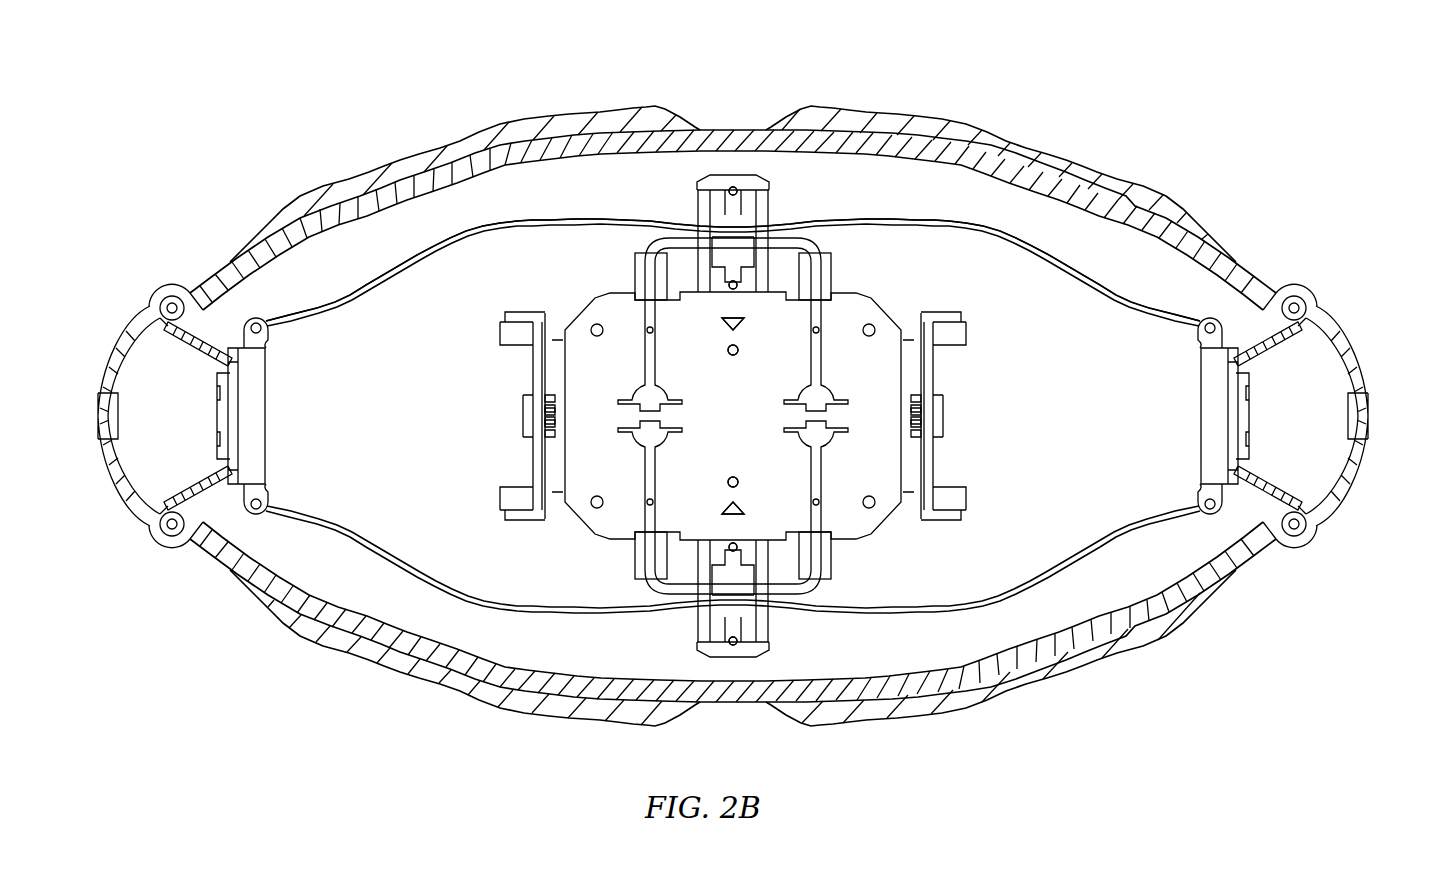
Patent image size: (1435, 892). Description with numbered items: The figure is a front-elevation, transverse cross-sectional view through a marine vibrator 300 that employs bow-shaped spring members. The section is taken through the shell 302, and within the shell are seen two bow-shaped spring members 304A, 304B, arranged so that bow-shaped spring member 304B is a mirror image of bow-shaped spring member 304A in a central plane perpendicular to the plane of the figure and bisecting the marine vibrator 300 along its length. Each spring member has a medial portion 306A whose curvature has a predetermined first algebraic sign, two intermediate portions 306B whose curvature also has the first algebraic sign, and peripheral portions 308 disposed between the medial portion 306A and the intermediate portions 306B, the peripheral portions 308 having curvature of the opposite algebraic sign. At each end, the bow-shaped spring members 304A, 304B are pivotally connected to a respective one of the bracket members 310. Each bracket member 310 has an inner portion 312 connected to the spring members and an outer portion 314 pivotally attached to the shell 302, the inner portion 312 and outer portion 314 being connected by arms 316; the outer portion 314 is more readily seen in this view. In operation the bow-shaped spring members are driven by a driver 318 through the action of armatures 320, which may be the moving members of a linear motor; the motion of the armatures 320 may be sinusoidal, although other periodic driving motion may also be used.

The marine vibrator 300 is at (262, 152).
The shell 302 is at (992, 120).
The bow-shaped spring member 304A is at (545, 224).
The bow-shaped spring member 304B is at (565, 608).
The medial portion 306A is at (797, 218).
The intermediate portions 306B is at (300, 303).
The peripheral portions 308 is at (453, 220).
The bracket members 310 is at (219, 501).
The inner portion 312 is at (1230, 502).
The outer portion 314 is at (135, 338).
The arms 316 is at (167, 295).
The driver 318 is at (965, 366).
The armatures 320 is at (845, 267).